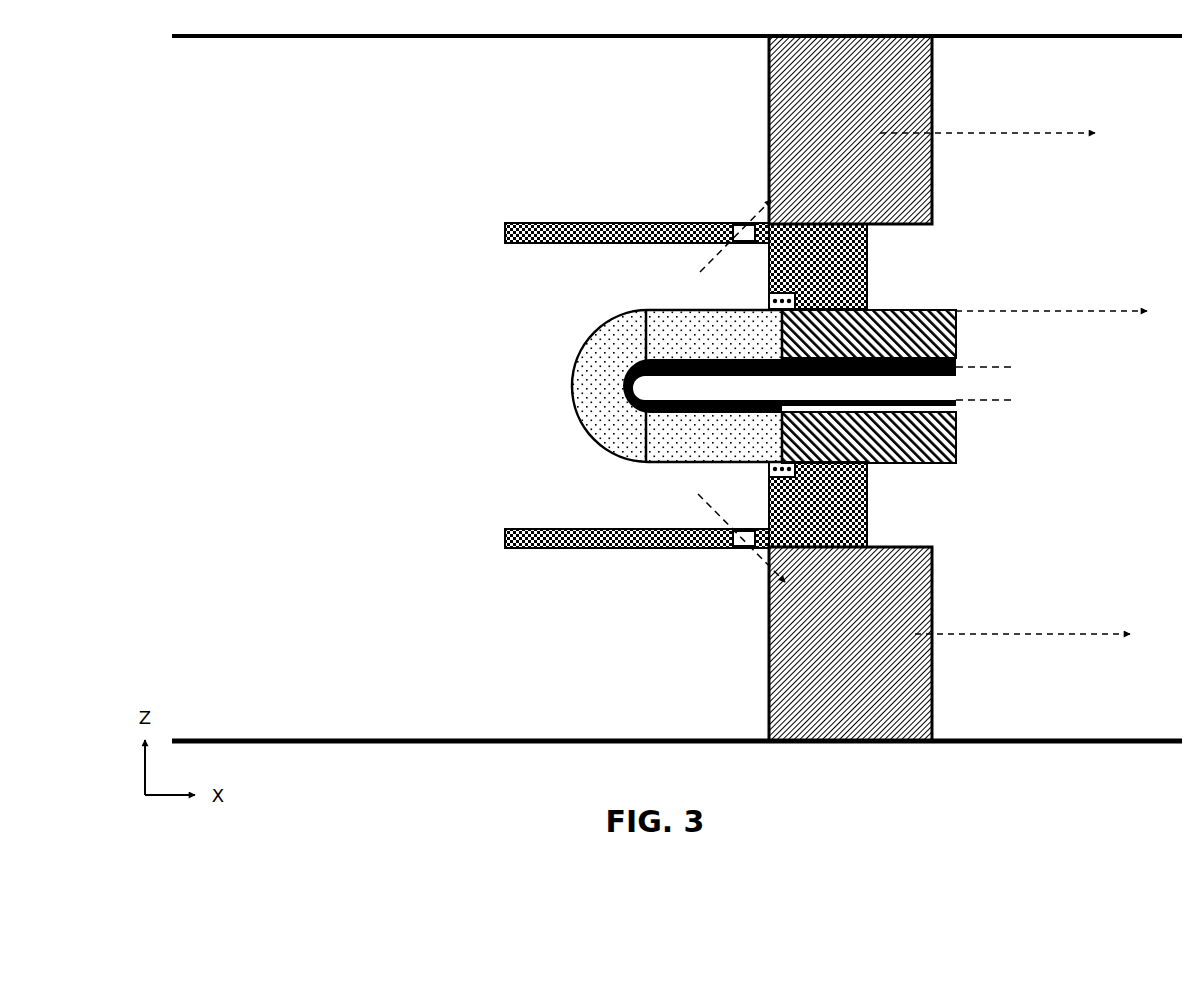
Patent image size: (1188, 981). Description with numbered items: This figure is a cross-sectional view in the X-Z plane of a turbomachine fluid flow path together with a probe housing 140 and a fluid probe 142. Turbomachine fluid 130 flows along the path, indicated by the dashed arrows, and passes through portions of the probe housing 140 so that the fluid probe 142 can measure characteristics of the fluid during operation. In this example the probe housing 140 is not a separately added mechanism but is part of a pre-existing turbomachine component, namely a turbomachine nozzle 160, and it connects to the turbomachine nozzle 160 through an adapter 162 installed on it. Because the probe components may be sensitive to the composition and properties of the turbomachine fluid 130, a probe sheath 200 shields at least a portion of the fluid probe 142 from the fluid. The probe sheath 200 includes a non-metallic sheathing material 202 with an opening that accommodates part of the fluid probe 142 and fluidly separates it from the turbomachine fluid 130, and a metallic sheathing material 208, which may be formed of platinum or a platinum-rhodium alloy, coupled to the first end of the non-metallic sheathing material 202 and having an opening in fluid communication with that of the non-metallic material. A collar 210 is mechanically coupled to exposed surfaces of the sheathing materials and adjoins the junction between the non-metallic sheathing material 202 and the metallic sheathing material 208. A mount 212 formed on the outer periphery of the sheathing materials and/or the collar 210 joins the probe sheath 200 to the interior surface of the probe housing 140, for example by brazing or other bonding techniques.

The turbomachine fluid 130 is at (457, 133).
The probe housing 140 is at (600, 232).
The fluid probe 142 is at (963, 360).
The turbomachine nozzle 160 is at (471, 40).
The adapter 162 is at (792, 106).
The probe sheath 200 is at (764, 385).
The non-metallic sheathing material 202 is at (690, 445).
The metallic sheathing material 208 is at (955, 437).
The collar 210 is at (770, 296).
The mount 212 is at (867, 283).